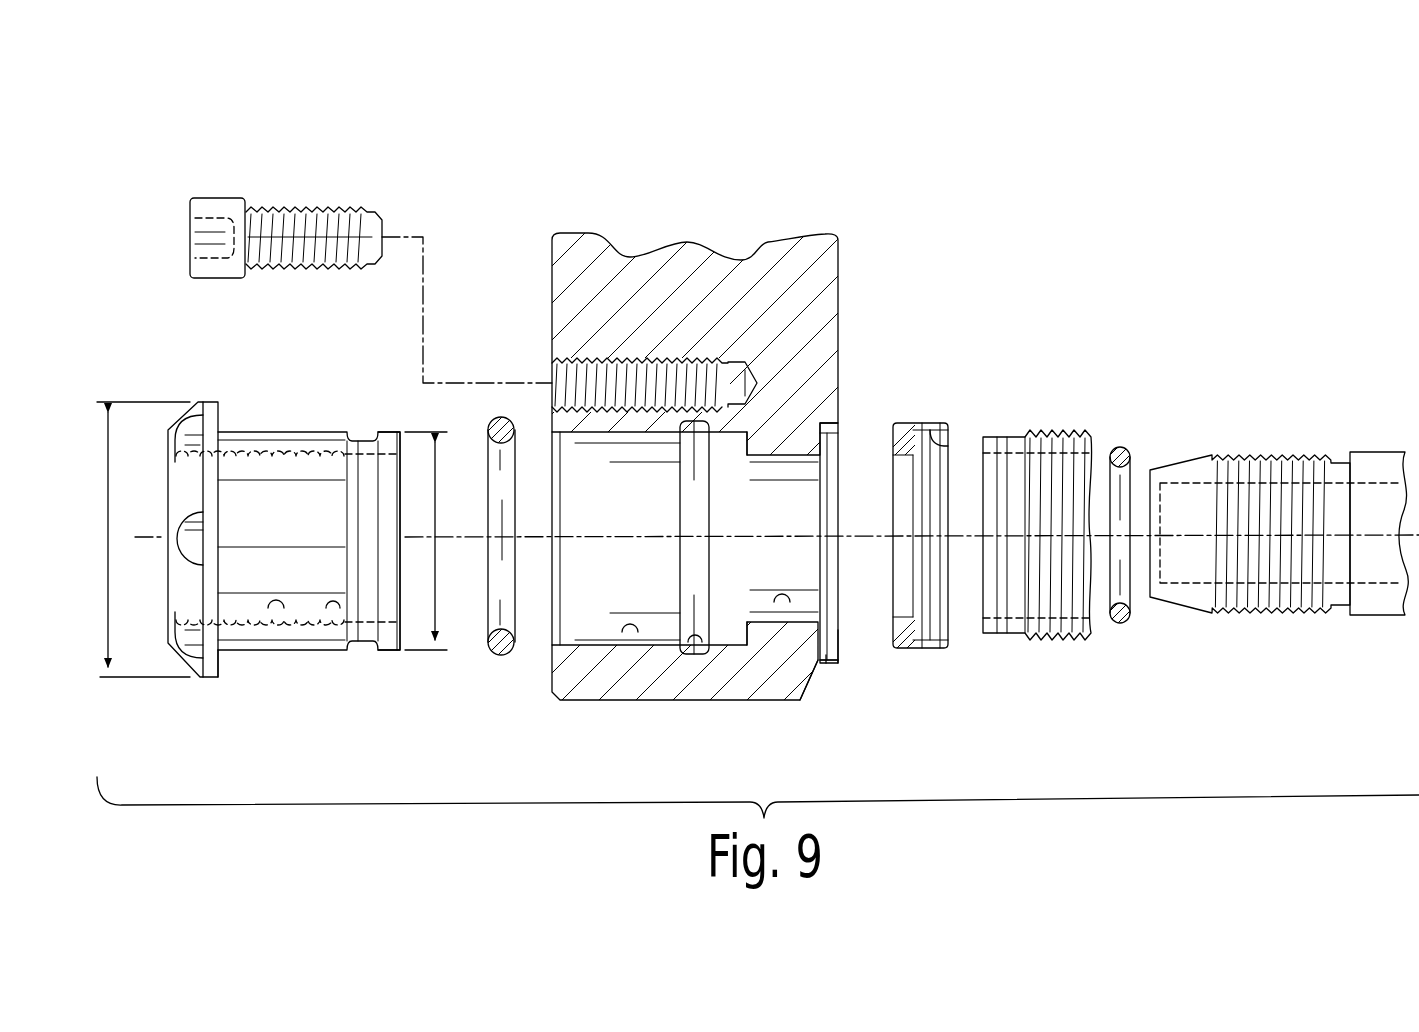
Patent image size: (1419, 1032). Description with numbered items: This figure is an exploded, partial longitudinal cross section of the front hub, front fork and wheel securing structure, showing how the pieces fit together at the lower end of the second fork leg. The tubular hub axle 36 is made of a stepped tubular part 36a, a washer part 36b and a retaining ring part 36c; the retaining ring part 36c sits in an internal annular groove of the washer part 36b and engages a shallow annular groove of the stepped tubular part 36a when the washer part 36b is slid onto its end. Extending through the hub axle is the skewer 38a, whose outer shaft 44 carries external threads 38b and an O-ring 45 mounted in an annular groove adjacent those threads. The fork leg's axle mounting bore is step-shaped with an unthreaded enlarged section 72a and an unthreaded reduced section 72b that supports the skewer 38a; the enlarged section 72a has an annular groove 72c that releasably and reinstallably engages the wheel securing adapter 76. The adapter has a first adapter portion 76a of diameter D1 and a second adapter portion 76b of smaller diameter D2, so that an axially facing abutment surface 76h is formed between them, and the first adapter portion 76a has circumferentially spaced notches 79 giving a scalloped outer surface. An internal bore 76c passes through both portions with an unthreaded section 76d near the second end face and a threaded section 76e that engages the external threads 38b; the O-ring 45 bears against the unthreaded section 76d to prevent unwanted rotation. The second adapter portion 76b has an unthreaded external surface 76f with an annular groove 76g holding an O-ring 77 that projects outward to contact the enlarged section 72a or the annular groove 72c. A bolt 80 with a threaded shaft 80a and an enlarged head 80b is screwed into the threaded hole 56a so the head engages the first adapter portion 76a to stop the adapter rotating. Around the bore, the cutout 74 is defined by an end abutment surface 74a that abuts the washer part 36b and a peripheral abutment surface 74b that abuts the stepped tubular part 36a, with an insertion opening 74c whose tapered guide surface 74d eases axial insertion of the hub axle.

The bolt 80 is at (360, 108).
The threaded shaft 80a is at (310, 210).
The enlarged head 80b is at (222, 200).
The wheel securing adapter 76 is at (196, 386).
The first adapter portion 76a is at (184, 658).
The second adapter portion 76b is at (277, 432).
The internal bore 76c is at (392, 755).
The unthreaded section 76d is at (328, 608).
The threaded section 76e is at (268, 608).
The external surface 76f is at (305, 533).
The annular groove 76g is at (375, 646).
The axially facing abutment surface 76h is at (226, 678).
The notches 79 is at (186, 526).
The first maximum diameter D1 is at (141, 539).
The second maximum diameter D2 is at (432, 541).
The O-ring 77 is at (507, 656).
The threaded hole 56a is at (552, 372).
The enlarged section 72a is at (630, 634).
The reduced section 72b is at (784, 606).
The annular groove 72c is at (696, 646).
The cutout 74 is at (830, 456).
The end abutment surface 74a is at (838, 663).
The peripheral abutment surface 74b is at (838, 645).
The insertion opening 74c is at (830, 664).
The tapered guide surface 74d is at (812, 682).
The tubular hub axle 36 is at (1093, 340).
The stepped tubular part 36a is at (1050, 434).
The washer part 36b is at (910, 428).
The retaining ring part 36c is at (948, 446).
The O-ring 45 is at (1120, 447).
The skewer 38a is at (1364, 440).
The external threads 38b is at (1252, 470).
The outer shaft 44 is at (1365, 600).